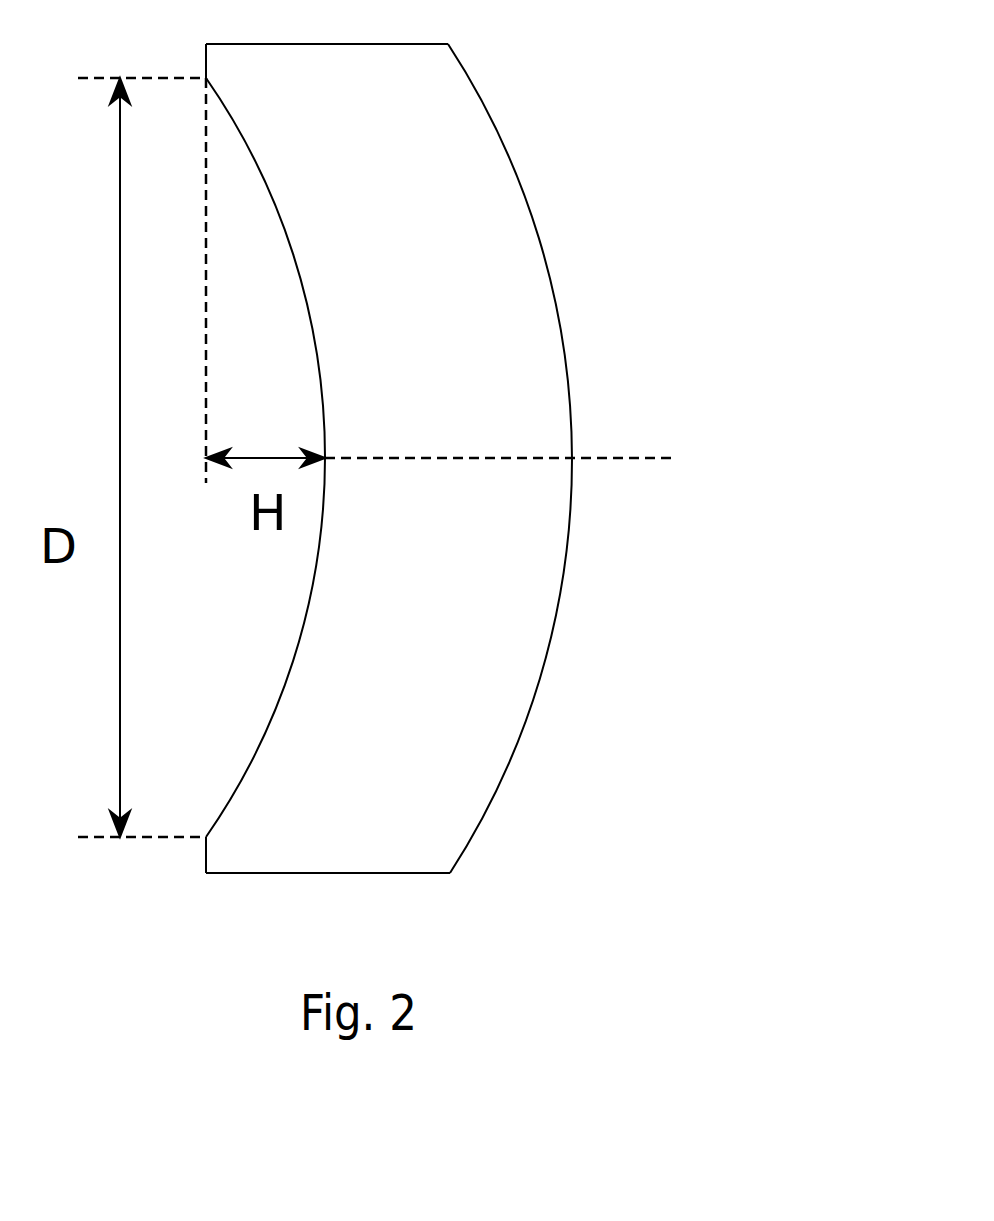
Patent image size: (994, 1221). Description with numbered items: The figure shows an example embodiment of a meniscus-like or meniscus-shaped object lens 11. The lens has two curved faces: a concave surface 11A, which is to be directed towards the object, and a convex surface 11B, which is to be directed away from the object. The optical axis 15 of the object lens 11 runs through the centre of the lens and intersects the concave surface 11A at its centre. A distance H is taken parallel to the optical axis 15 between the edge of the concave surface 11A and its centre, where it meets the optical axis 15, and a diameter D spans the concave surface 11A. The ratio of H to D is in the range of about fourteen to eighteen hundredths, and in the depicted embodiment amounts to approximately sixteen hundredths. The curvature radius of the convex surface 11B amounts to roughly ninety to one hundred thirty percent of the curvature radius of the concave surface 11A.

The object lens 11 is at (527, 452).
The concave surface 11A is at (268, 733).
The convex surface 11B is at (558, 613).
The optical axis 15 is at (619, 457).